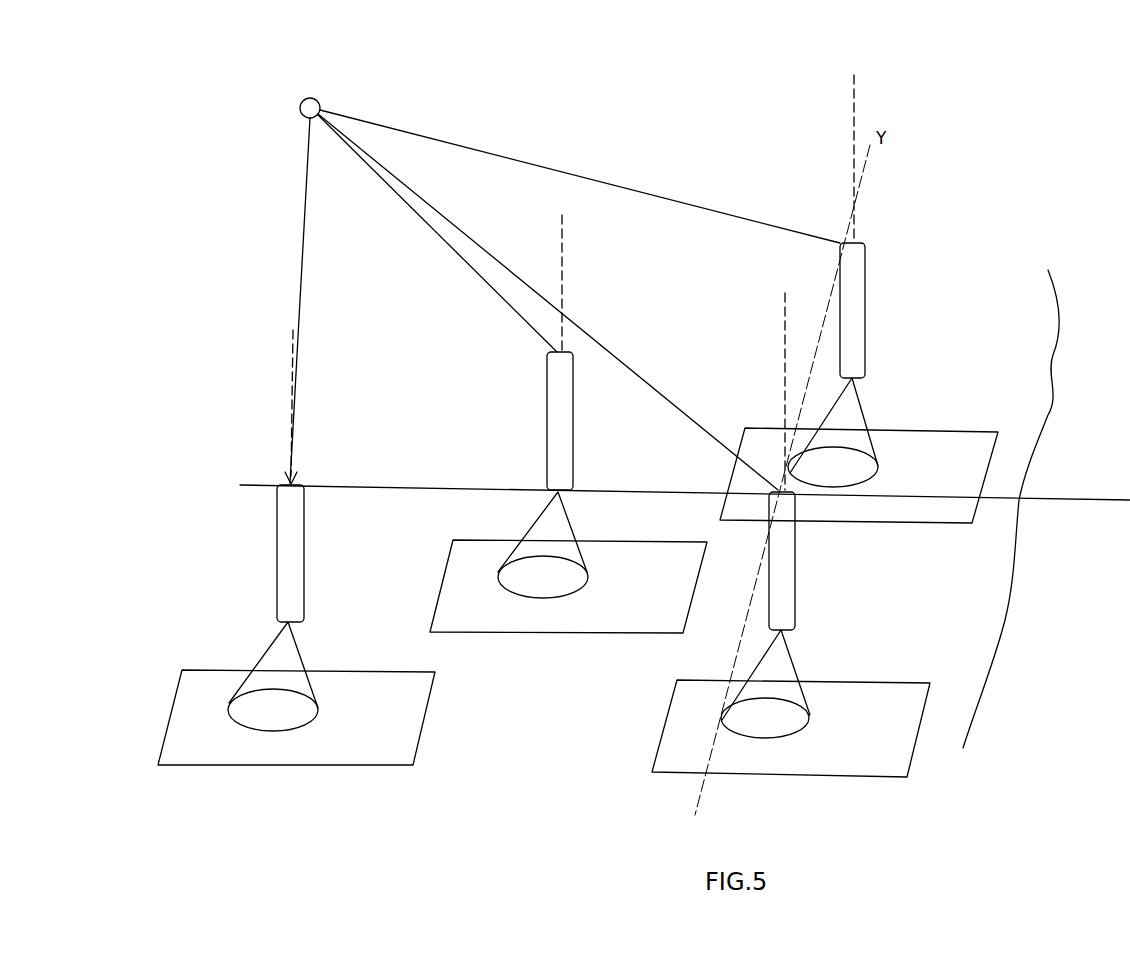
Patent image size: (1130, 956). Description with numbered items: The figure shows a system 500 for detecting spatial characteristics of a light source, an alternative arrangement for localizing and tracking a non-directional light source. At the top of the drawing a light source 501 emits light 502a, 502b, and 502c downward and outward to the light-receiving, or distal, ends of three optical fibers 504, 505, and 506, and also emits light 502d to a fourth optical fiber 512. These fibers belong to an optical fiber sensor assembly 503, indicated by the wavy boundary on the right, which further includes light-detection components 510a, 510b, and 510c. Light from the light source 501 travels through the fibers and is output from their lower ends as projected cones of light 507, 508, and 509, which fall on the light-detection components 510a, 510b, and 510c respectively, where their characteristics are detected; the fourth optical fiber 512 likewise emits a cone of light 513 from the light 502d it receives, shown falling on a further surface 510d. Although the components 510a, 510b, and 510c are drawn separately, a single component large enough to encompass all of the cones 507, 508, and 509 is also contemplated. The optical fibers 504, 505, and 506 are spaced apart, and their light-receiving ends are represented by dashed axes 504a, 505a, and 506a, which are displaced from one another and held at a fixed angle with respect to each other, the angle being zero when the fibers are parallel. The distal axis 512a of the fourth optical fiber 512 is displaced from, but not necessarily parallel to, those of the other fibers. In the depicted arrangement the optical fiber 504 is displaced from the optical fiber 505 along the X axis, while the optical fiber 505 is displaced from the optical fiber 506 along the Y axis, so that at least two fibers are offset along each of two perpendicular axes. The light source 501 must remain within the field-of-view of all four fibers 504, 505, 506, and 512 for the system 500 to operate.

The system 500 is at (1050, 93).
The light source 501 is at (321, 102).
The light 502a is at (303, 260).
The light 502b is at (472, 242).
The light 502c is at (532, 162).
The light 502d is at (483, 280).
The optical fiber sensor assembly 503 is at (1034, 509).
The optical fiber 504 is at (306, 556).
The axis 504a is at (296, 343).
The optical fiber 505 is at (796, 578).
The axis 505a is at (784, 355).
The optical fiber 506 is at (866, 300).
The axis 506a is at (855, 108).
The cone of light 507 is at (293, 655).
The cone of light 508 is at (790, 665).
The cone of light 509 is at (860, 410).
The light-detection component 510a is at (414, 743).
The light-detection component 510b is at (838, 776).
The light-detection component 510c is at (975, 428).
The illuminated surface 510d is at (613, 637).
The fourth optical fiber 512 is at (574, 420).
The light guide axis 512a is at (563, 255).
The cone of light 513 is at (568, 524).